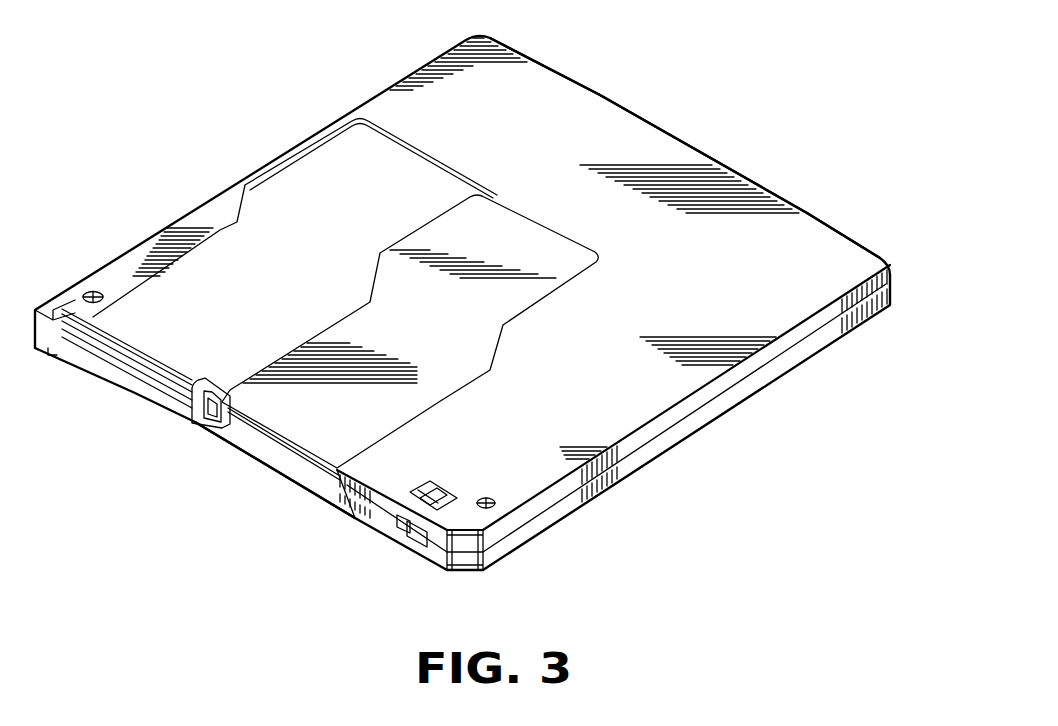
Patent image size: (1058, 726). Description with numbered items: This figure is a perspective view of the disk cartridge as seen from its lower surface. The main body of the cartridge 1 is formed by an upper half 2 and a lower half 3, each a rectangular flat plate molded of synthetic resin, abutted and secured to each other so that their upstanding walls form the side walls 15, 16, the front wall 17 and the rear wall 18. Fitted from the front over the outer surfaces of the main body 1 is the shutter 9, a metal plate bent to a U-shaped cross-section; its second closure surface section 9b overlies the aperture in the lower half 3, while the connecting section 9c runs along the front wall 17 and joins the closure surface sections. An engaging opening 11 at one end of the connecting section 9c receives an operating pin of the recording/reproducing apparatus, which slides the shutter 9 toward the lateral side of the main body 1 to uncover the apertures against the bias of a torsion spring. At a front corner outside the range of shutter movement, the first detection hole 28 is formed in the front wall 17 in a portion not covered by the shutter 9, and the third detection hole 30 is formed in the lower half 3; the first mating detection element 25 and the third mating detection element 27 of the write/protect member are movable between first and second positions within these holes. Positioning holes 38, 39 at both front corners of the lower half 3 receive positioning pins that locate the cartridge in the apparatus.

The main body of the cartridge 1 is at (487, 303).
The upper half 2 is at (742, 386).
The lower half 3 is at (852, 250).
The shutter 9 is at (316, 358).
The second closure surface section 9b is at (520, 287).
The connecting section 9c is at (282, 463).
The engaging opening 11 is at (203, 428).
The side wall 15 is at (693, 423).
The side wall 16 is at (238, 182).
The front wall 17 is at (357, 510).
The rear wall 18 is at (624, 106).
The first mating detection element 25 is at (417, 545).
The third mating detection element 27 is at (445, 494).
The first detection hole 28 is at (396, 532).
The third detection hole 30 is at (430, 487).
The positioning hole 38 is at (495, 498).
The positioning hole 39 is at (88, 292).